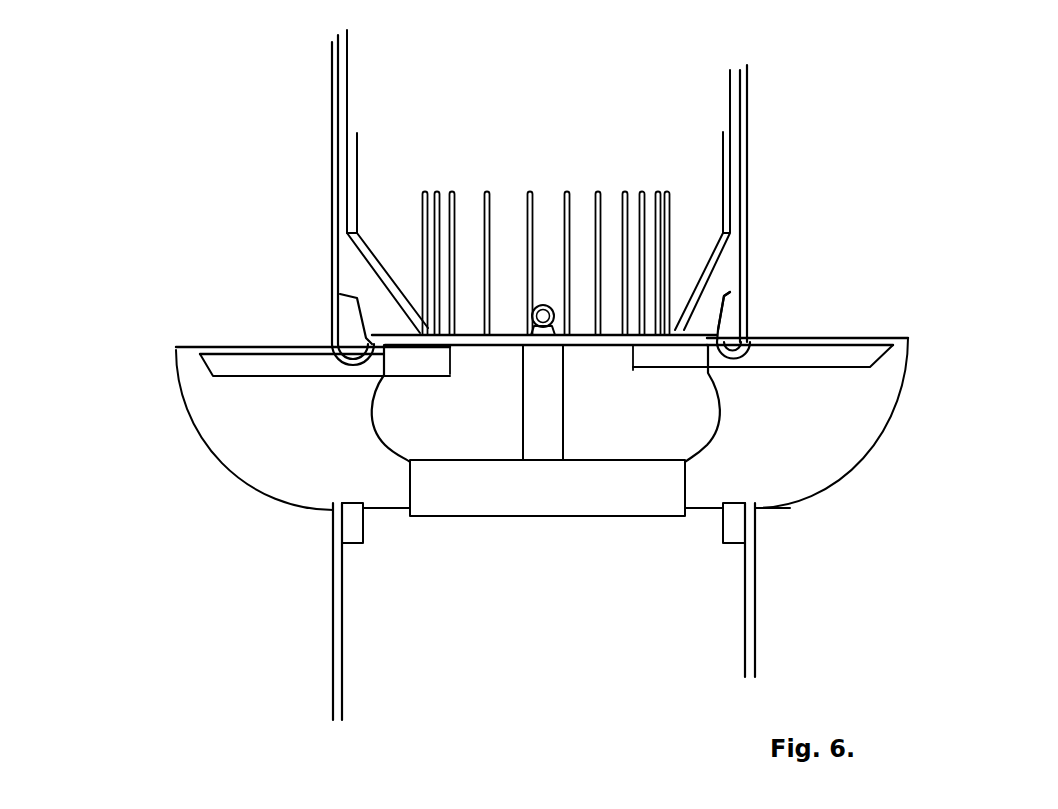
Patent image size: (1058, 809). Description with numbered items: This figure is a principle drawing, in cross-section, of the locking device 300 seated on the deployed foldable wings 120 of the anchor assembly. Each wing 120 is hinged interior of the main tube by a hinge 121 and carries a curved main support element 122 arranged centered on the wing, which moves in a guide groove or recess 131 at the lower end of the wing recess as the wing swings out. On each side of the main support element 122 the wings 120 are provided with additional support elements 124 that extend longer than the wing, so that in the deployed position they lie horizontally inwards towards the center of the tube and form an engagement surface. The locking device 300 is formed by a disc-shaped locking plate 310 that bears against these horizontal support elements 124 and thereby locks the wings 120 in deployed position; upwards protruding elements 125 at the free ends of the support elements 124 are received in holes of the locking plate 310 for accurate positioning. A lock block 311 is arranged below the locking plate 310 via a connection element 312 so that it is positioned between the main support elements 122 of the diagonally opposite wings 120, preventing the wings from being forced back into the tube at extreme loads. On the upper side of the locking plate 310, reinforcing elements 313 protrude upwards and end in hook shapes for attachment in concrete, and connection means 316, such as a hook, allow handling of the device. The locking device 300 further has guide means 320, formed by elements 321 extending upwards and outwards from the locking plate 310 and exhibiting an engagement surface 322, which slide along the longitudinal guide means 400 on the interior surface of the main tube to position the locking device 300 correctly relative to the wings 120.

The guide means 400 is at (352, 106).
The locking device 300 is at (558, 156).
The locking plate 310 is at (417, 340).
The lock block 311 is at (505, 500).
The connection element 312 is at (548, 418).
The reinforcing elements 313 is at (670, 250).
The connection means 316 is at (548, 308).
The guide means 320 is at (372, 228).
The elements 321 is at (377, 287).
The engagement surface 322 is at (345, 188).
The foldable wings 120 is at (856, 337).
The hinge 121 is at (750, 318).
The main support element 122 is at (810, 436).
The support elements 124 is at (807, 358).
The upwards protruding elements 125 is at (443, 346).
The guide groove or recess 131 is at (748, 518).